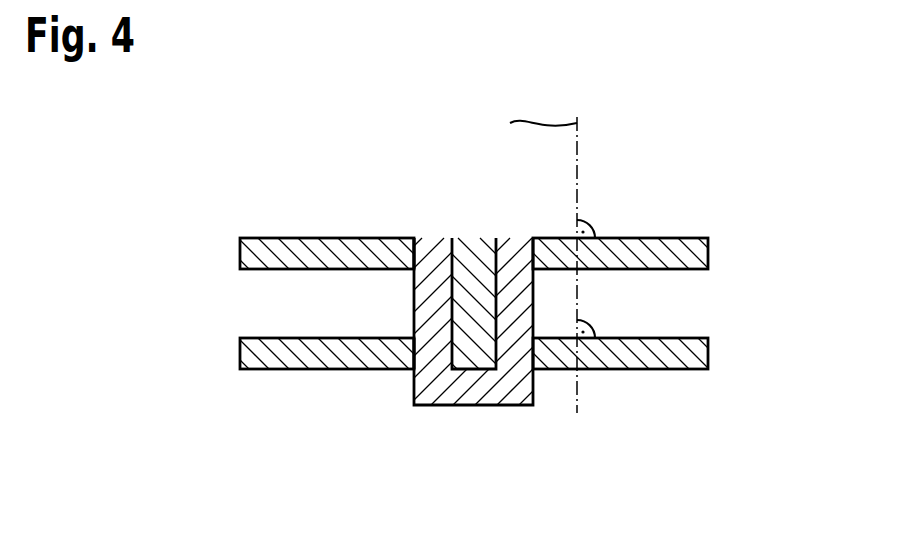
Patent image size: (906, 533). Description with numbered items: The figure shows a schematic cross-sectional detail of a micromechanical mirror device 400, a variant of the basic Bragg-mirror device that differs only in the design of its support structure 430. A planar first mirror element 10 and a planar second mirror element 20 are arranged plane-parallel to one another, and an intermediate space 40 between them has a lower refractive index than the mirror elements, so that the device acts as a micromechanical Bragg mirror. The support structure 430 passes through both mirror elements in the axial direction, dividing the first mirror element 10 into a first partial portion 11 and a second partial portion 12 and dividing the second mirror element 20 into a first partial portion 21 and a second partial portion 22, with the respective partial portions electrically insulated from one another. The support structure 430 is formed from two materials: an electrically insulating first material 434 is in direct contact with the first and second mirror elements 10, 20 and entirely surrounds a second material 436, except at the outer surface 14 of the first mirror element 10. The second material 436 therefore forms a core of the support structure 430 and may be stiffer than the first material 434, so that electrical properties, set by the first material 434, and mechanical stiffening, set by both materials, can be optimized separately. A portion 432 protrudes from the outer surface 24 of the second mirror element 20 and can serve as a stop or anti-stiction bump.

The micromechanical mirror device 400 is at (243, 195).
The first mirror element 10 is at (474, 209).
The first partial portion of the first mirror element 11 is at (332, 237).
The second partial portion of the first mirror element 12 is at (633, 237).
The outer surface of the first mirror element 14 is at (397, 237).
The second mirror element 20 is at (482, 403).
The first partial portion of the second mirror element 21 is at (303, 370).
The second partial portion of the second mirror element 22 is at (690, 360).
The outer surface of the second mirror element 24 is at (385, 377).
The intermediate space 40 is at (692, 301).
The support structure 430 is at (502, 393).
The protruding portion 432 is at (517, 385).
The first material 434 is at (440, 405).
The second material 436 is at (465, 237).